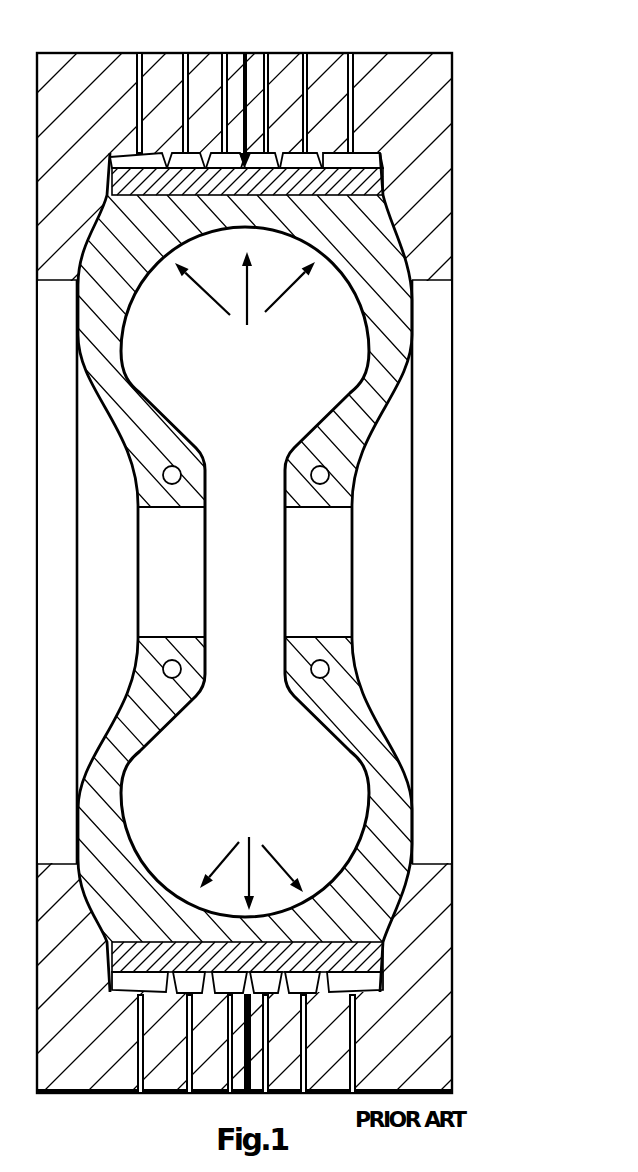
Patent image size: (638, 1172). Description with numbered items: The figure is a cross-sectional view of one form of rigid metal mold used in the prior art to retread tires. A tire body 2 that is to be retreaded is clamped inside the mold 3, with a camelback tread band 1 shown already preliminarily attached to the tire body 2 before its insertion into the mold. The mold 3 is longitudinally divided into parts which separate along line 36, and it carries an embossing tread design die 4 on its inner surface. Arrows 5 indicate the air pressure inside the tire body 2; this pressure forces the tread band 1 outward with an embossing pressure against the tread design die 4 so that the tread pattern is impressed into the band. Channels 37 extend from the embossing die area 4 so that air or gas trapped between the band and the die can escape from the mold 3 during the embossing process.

The camelback tread band 1 is at (357, 958).
The tire body 2 is at (392, 823).
The mold 3 is at (450, 895).
The tread design die 4 is at (357, 983).
The arrows 5 is at (283, 298).
The line 36 is at (250, 51).
The channels 37 is at (355, 51).